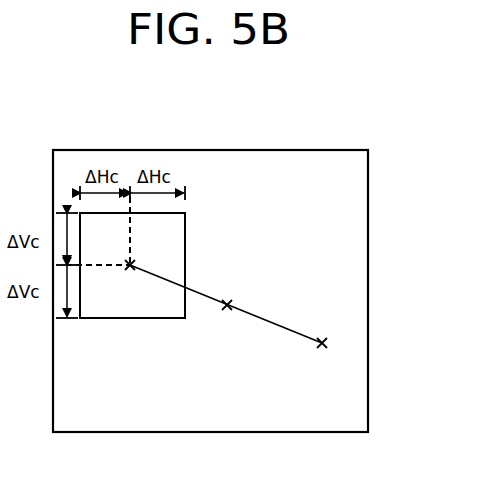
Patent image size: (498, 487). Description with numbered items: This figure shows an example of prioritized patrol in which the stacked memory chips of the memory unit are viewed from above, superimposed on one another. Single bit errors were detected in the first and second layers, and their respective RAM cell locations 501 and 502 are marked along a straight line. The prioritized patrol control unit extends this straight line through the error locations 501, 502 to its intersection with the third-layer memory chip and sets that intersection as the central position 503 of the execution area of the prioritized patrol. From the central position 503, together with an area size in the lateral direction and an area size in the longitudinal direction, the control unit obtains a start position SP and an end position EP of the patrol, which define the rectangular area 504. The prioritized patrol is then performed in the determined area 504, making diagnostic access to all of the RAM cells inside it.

The location of RAM cell of first layer 501 is at (320, 354).
The location of RAM cell of second layer 502 is at (225, 316).
The central position of execution area 503 is at (129, 282).
The area in which prioritized patrol is performed 504 is at (186, 245).
The start position SP is at (75, 328).
The end position EP is at (200, 207).